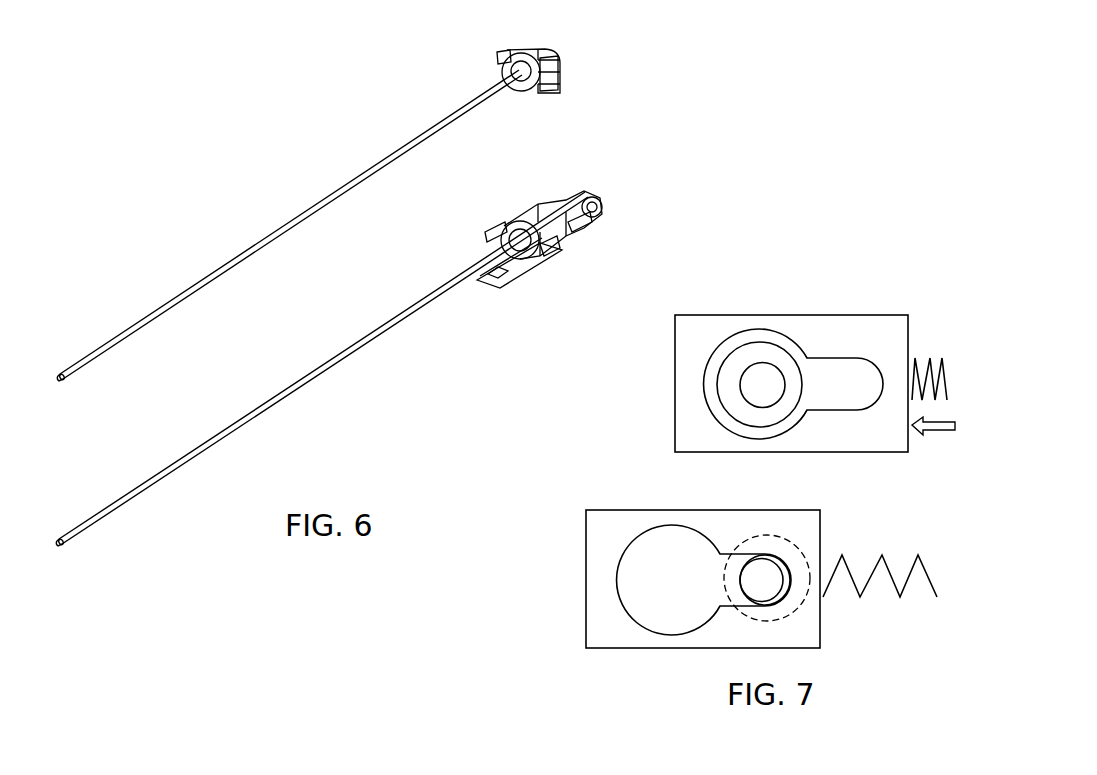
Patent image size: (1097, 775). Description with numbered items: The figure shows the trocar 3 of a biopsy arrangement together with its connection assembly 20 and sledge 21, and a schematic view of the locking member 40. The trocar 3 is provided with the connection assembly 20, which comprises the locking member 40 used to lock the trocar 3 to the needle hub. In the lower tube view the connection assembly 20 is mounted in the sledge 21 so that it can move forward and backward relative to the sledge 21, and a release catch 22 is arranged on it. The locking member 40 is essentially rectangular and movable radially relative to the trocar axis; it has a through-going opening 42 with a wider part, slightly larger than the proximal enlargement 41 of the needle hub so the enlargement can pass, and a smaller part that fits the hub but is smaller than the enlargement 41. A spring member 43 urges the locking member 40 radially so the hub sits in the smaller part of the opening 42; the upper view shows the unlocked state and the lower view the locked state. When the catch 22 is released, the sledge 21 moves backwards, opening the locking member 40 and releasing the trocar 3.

In FIG. 6, the trocar 3 is at (177, 298).
In FIG. 7, the trocar 3 is at (762, 482).
In FIG. 6, the connection assembly 20 is at (521, 67).
In FIG. 6, the sledge 21 is at (552, 281).
In FIG. 6, the release catch 22 is at (489, 287).
In FIG. 6, the locking member 40 is at (542, 65).
In FIG. 7, the locking member 40 is at (840, 315).
In FIG. 7, the proximal enlargement 41 is at (743, 358).
In FIG. 7, the through-going opening 42 is at (710, 383).
In FIG. 7, the spring member 43 is at (928, 358).